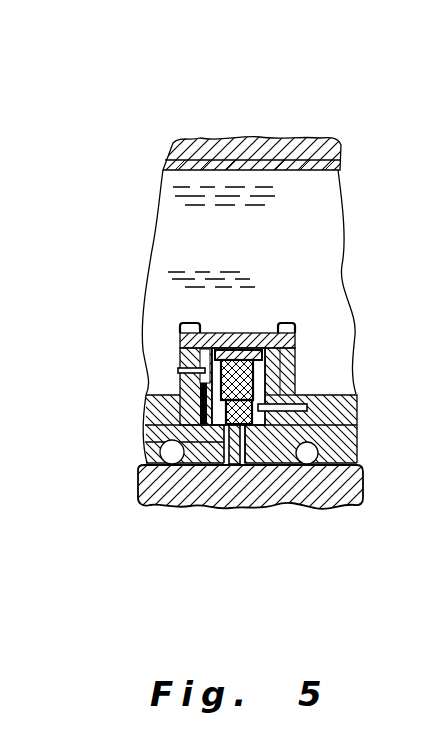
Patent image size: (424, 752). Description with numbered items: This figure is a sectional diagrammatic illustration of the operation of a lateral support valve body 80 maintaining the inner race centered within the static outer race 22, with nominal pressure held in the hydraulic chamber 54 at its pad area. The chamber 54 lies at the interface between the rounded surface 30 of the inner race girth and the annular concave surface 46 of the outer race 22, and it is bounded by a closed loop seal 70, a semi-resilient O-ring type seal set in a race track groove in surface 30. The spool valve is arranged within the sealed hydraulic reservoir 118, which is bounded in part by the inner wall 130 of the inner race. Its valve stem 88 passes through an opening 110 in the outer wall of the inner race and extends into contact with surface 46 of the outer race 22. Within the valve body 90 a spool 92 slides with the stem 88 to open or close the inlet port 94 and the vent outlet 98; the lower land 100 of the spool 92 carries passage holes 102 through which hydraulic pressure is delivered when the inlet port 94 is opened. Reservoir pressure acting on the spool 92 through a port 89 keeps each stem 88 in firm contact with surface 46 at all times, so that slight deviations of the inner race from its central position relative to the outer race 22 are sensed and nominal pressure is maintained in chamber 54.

The outer race 22 is at (140, 493).
The rounded surface 30 is at (232, 464).
The surface 46 is at (183, 470).
The hydraulic chamber 54 is at (330, 478).
The closed loop seal 70 is at (147, 465).
The lateral support valve body 80 is at (259, 348).
The valve stem 88 is at (258, 464).
The port 89 is at (236, 333).
The valve body 90 is at (295, 357).
The spool 92 is at (291, 323).
The inlet port 94 is at (202, 372).
The vent outlet 98 is at (293, 397).
The lower land 100 is at (160, 405).
The passage holes 102 is at (178, 395).
The opening 110 is at (172, 443).
The sealed reservoir 118 is at (285, 203).
The inner wall 130 is at (205, 150).